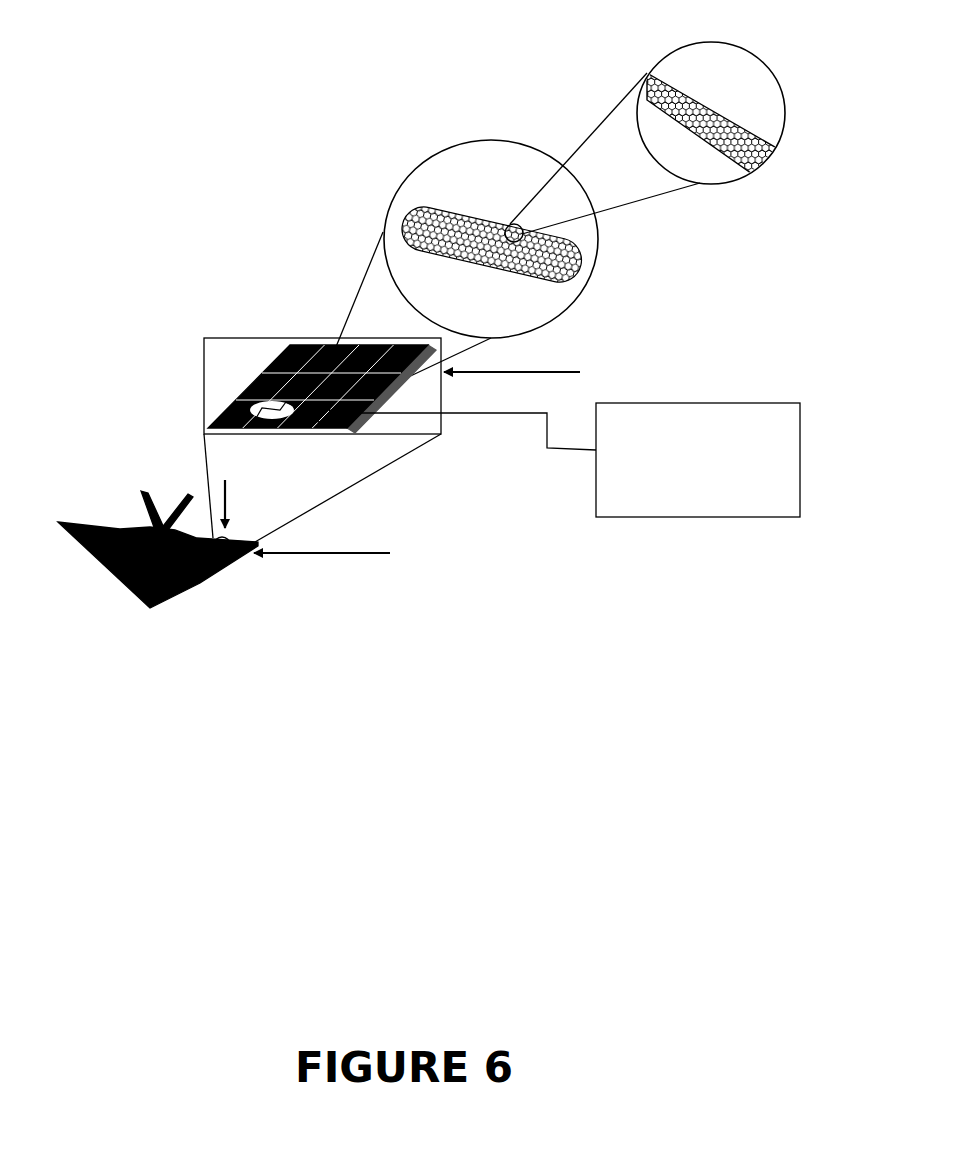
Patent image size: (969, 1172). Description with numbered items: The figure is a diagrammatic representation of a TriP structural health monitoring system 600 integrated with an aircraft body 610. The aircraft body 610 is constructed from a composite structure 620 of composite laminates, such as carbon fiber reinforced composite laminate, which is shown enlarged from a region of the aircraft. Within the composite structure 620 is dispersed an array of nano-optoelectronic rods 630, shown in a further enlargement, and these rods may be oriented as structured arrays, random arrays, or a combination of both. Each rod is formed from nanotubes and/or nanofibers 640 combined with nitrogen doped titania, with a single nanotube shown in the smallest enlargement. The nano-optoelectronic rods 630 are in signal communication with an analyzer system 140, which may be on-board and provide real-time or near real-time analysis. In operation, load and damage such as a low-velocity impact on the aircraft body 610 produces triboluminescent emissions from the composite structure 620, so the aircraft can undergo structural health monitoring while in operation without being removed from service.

The TriP structural health monitoring system 600 is at (430, 519).
The aircraft body 610 is at (171, 603).
The composite structure 620 is at (238, 338).
The nano-optoelectronic rods 630 is at (418, 162).
The nanotubes and/or nanofibers 640 is at (643, 72).
The analyzer system 140 is at (565, 460).